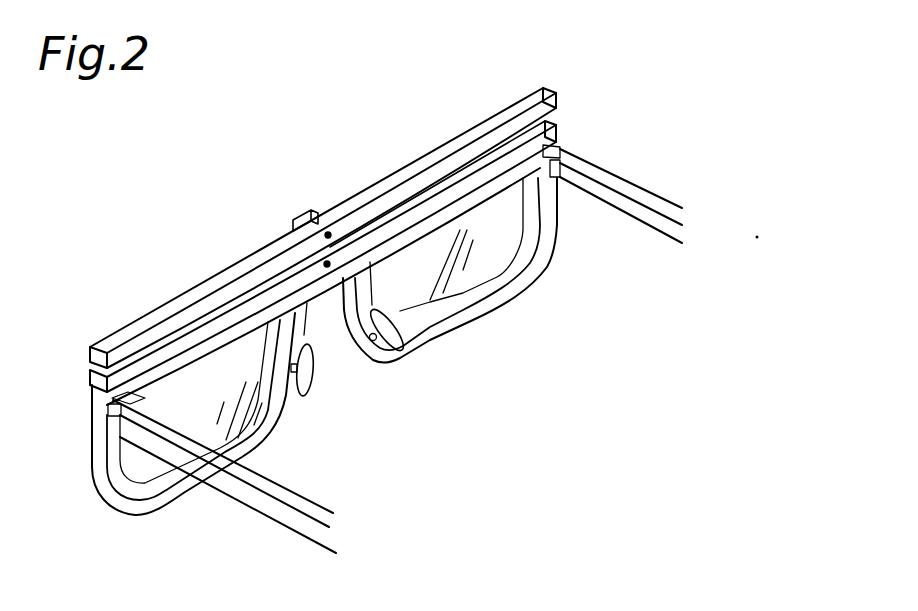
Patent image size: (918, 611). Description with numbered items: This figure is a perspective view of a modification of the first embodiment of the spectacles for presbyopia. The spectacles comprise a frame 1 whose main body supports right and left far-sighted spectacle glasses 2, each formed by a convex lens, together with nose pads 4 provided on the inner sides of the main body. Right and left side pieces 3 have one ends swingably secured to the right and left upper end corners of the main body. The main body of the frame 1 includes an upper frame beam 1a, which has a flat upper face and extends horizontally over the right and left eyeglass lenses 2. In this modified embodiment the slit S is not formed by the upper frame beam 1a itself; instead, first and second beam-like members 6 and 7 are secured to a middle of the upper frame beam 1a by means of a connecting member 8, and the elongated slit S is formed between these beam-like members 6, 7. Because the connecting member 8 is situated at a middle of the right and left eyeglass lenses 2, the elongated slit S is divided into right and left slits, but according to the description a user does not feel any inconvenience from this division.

The frame 1 is at (103, 467).
The upper frame beam 1a is at (471, 205).
The far-sighted spectacle glasses 2 is at (463, 283).
The side pieces 3 is at (627, 203).
The nose pads 4 is at (393, 355).
The first beam-like member 6 is at (216, 276).
The second beam-like member 7 is at (397, 223).
The connecting member 8 is at (310, 208).
The slit S is at (150, 346).